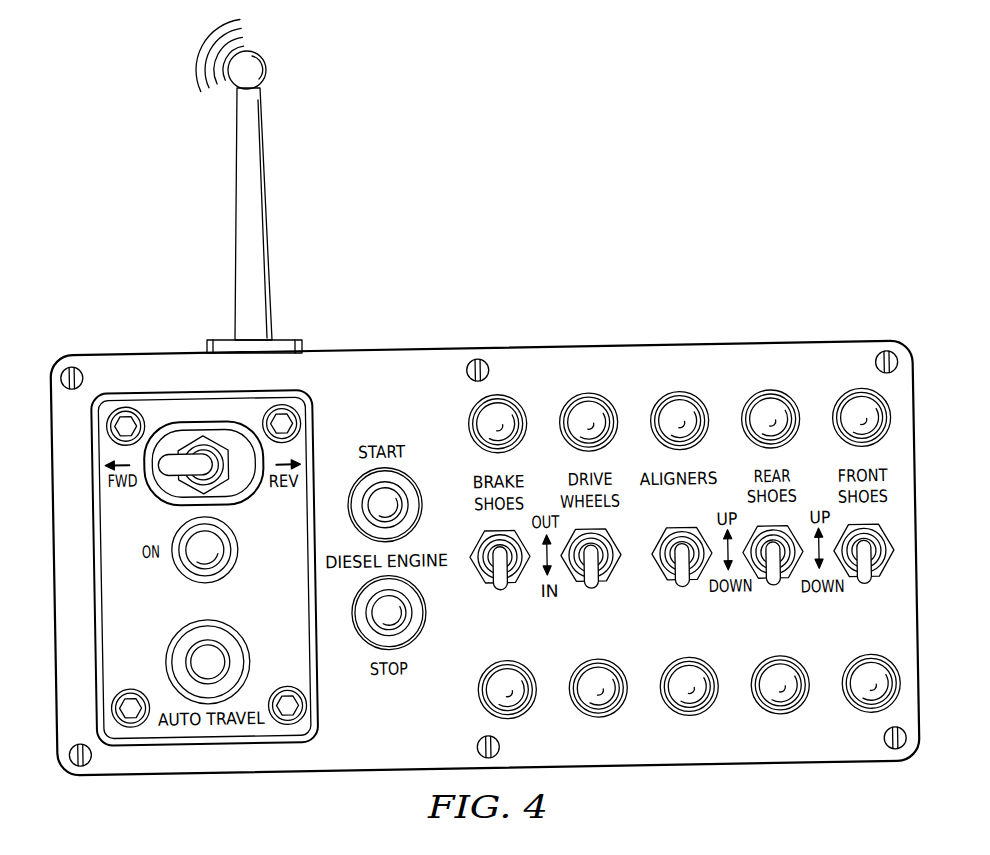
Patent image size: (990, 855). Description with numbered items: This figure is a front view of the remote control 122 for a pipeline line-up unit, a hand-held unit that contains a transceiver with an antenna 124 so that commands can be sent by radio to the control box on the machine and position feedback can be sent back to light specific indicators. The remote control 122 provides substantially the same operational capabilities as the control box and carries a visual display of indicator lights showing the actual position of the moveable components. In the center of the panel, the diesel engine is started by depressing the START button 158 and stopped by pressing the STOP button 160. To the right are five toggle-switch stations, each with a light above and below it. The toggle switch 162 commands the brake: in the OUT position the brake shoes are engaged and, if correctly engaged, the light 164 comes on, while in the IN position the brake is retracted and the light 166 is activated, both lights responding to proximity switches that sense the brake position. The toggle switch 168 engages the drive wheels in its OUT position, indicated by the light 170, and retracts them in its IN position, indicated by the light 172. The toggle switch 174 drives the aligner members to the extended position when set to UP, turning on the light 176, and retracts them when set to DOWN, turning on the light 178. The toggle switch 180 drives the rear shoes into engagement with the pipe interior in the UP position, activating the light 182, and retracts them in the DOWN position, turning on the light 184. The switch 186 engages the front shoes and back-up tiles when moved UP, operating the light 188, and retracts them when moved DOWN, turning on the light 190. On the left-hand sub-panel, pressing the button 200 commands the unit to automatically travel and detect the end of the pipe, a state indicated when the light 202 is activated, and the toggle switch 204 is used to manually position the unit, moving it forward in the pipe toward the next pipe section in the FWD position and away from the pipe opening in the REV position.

The remote control 122 is at (612, 221).
The antenna 124 is at (236, 214).
The START button 158 is at (423, 489).
The STOP button 160 is at (426, 619).
The toggle switch 162 is at (503, 593).
The light 164 is at (515, 401).
The light 166 is at (521, 718).
The toggle switch 168 is at (593, 590).
The light 170 is at (606, 395).
The light 172 is at (615, 719).
The toggle switch 174 is at (684, 591).
The light 176 is at (696, 397).
The light 178 is at (706, 721).
The toggle switch 180 is at (776, 590).
The light 182 is at (788, 397).
The light 184 is at (796, 712).
The switch 186 is at (867, 591).
The light 188 is at (895, 424).
The light 190 is at (900, 688).
The button 200 is at (178, 626).
The light 202 is at (229, 569).
The toggle switch 204 is at (234, 464).